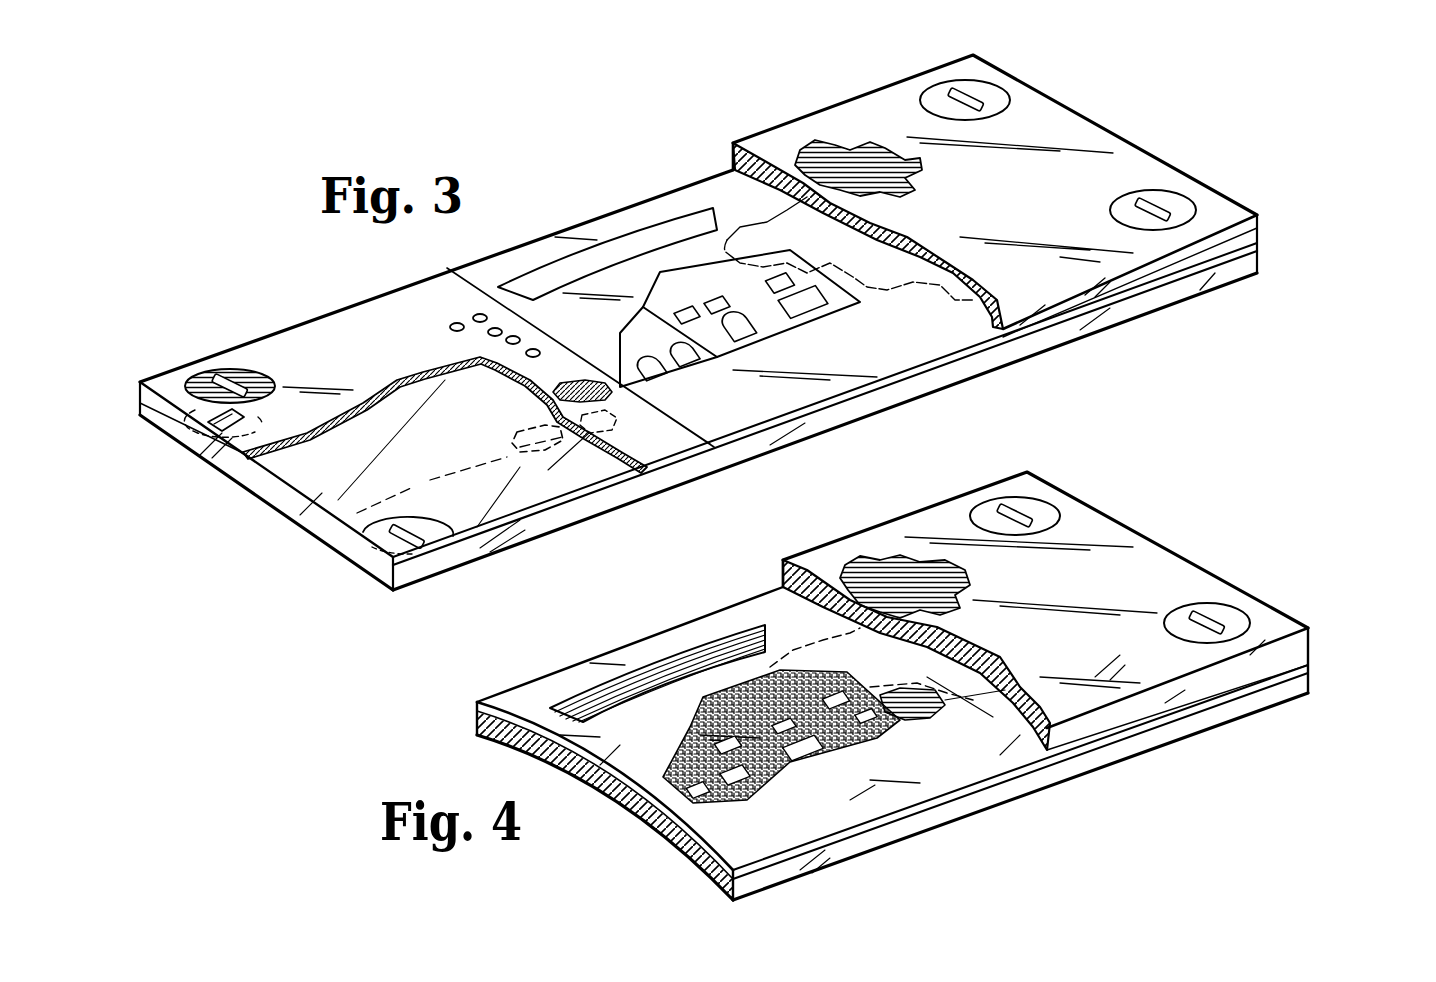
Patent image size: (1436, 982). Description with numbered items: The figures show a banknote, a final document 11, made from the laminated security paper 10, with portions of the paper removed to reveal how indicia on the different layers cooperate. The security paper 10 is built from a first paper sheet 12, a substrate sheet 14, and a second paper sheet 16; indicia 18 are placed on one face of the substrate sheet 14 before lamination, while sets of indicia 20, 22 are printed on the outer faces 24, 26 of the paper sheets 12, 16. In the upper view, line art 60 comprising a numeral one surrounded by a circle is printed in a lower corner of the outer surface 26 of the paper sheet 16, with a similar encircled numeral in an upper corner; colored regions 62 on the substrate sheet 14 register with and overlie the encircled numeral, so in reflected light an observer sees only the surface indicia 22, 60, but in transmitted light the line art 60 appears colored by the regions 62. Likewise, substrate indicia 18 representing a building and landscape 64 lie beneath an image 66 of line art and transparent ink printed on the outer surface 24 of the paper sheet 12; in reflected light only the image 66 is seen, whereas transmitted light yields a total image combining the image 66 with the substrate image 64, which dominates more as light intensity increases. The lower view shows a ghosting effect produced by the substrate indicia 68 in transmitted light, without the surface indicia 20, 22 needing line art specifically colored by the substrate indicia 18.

In FIG. 3, the laminated security paper 10 is at (1133, 138).
In FIG. 4, the laminated security paper 10 is at (1168, 543).
In FIG. 3, the final document 11 is at (1230, 200).
In FIG. 4, the final document 11 is at (1213, 575).
In FIG. 3, the first paper sheet 12 is at (1262, 230).
In FIG. 4, the first paper sheet 12 is at (1310, 637).
In FIG. 3, the substrate sheet 14 is at (1262, 245).
In FIG. 4, the substrate sheet 14 is at (473, 703).
In FIG. 3, the second paper sheet 16 is at (1262, 263).
In FIG. 4, the second paper sheet 16 is at (473, 732).
In FIG. 3, the indicia 18 is at (687, 267).
In FIG. 4, the indicia 18 is at (727, 693).
In FIG. 4, the indicia 20 is at (877, 560).
In FIG. 3, the indicia 22 is at (350, 548).
In FIG. 3, the outer face 24 is at (983, 70).
In FIG. 4, the outer face 24 is at (1078, 522).
In FIG. 3, the outer face 26 is at (467, 563).
In FIG. 4, the outer face 26 is at (813, 867).
In FIG. 3, the line art 60 is at (197, 437).
In FIG. 3, the colored regions 62 is at (228, 372).
In FIG. 3, the building and landscape 64 is at (813, 318).
In FIG. 3, the image 66 is at (883, 237).
In FIG. 4, the substrate indicia 68 is at (880, 740).